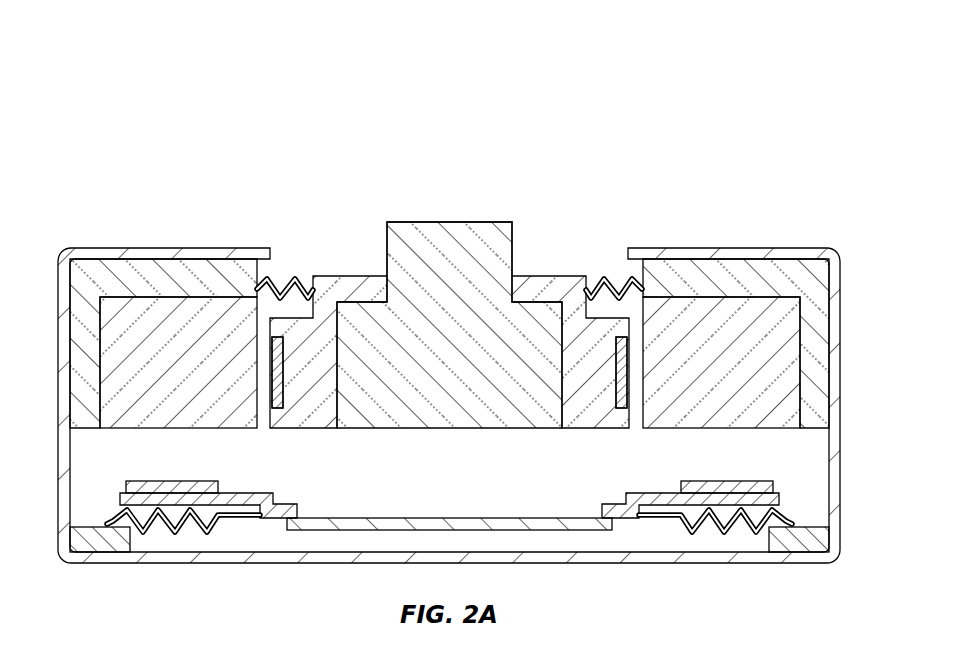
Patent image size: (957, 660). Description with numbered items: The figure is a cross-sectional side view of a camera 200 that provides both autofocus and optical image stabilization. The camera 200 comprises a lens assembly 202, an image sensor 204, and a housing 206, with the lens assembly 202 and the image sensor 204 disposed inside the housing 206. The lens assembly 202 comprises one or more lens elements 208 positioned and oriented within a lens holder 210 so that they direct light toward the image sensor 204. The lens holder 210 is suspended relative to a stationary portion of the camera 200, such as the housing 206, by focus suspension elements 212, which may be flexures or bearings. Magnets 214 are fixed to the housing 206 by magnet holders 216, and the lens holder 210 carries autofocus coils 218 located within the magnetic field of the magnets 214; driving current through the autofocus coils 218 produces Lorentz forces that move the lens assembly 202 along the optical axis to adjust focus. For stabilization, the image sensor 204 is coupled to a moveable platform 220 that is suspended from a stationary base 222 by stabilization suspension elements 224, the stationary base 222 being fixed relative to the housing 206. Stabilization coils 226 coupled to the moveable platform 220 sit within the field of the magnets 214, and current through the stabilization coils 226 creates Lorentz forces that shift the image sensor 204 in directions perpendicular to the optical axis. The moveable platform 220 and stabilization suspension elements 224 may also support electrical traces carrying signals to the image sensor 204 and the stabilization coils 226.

The camera 200 is at (598, 85).
The lens assembly 202 is at (516, 274).
The image sensor 204 is at (382, 519).
The housing 206 is at (843, 370).
The lens elements 208 is at (447, 220).
The lens holder 210 is at (348, 275).
The focus suspension elements 212 is at (300, 277).
The magnets 214 is at (112, 428).
The magnet holders 216 is at (85, 428).
The autofocus coils 218 is at (270, 347).
The moveable platform 220 is at (263, 493).
The stationary base 222 is at (130, 542).
The stabilization suspension elements 224 is at (213, 530).
The stabilization coils 226 is at (173, 481).